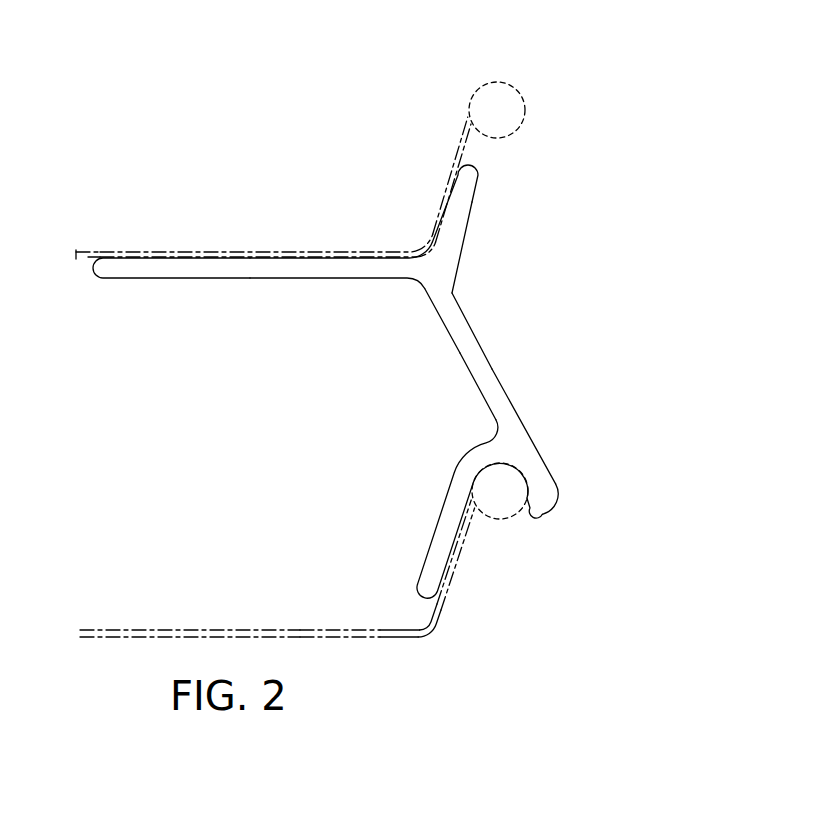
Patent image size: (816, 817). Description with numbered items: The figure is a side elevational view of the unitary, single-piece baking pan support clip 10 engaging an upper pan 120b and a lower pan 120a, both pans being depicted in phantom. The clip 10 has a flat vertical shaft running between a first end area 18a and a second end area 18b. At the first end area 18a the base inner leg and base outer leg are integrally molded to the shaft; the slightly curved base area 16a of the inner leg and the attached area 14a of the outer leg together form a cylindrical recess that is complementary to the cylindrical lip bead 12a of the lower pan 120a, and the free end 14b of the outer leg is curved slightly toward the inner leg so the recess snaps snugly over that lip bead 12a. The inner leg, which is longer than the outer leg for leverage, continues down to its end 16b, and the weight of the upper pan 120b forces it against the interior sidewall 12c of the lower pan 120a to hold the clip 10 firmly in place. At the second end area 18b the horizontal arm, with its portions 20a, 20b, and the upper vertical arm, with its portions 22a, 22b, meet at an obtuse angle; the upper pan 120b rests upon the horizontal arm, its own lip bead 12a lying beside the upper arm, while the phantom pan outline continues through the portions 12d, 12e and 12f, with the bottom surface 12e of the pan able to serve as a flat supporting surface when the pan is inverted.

The baking pan support clip 10 is at (579, 348).
The lip bead 12a is at (497, 86).
The interior sidewall 12c is at (432, 612).
The lower flat portion of sheet member 12d is at (316, 627).
The bottom surface 12e is at (84, 262).
The upper inclined portion of sheet member 12f is at (467, 148).
The attached area of base outer leg 14a is at (539, 461).
The free end of base outer leg 14b is at (552, 500).
The base area of base inner leg 16a is at (482, 452).
The arm end 16b is at (421, 583).
The first end area of vertical shaft 18a is at (512, 435).
The second end area of vertical shaft 18b is at (444, 292).
The base arm inner portion 20a is at (388, 279).
The base arm outer portion 20b is at (142, 279).
The finger tip 22a is at (474, 184).
The finger side 22b is at (451, 249).
The lower pan 120a is at (246, 628).
The upper pan 120b is at (246, 248).